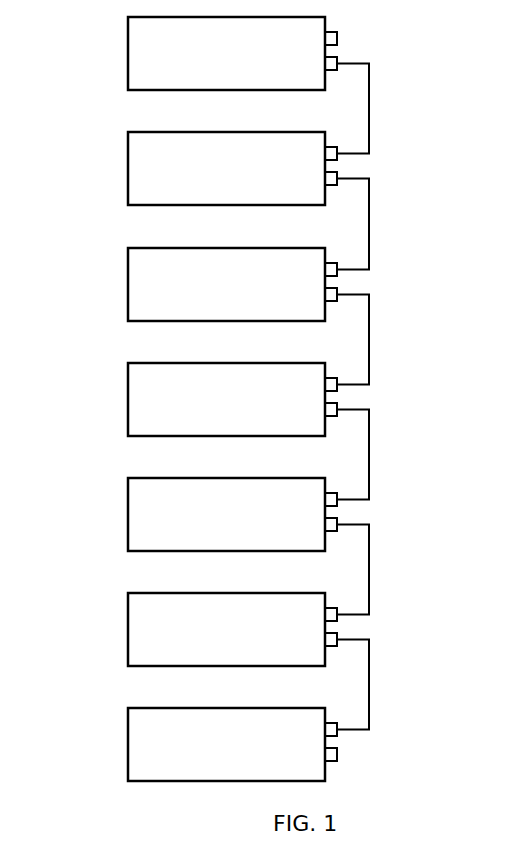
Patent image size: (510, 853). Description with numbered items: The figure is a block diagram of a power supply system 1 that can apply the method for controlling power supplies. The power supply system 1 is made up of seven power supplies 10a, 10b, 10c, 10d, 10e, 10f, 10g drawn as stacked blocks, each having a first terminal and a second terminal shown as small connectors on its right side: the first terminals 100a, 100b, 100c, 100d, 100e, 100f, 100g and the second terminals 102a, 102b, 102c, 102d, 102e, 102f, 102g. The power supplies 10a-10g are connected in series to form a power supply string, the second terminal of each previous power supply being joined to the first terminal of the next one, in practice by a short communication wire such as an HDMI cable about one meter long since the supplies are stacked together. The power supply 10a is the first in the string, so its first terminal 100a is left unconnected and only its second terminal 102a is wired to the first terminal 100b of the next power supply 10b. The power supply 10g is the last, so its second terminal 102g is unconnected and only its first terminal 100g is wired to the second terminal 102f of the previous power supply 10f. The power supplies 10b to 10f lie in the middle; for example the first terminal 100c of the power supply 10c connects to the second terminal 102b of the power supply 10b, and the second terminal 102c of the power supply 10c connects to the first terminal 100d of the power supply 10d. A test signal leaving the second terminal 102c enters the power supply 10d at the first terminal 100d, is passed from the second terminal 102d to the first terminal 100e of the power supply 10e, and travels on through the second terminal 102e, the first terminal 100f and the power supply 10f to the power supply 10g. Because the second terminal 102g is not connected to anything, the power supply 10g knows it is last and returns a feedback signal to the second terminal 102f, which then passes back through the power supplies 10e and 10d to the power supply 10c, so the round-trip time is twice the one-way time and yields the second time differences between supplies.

The power supply system 1 is at (461, 51).
The power supply 10a is at (129, 67).
The power supply 10b is at (129, 182).
The power supply 10c is at (129, 298).
The power supply 10d is at (129, 413).
The power supply 10e is at (129, 528).
The power supply 10f is at (129, 643).
The power supply 10g is at (129, 758).
The first terminal 100a is at (325, 39).
The first terminal 100b is at (325, 154).
The first terminal 100c is at (325, 270).
The first terminal 100d is at (325, 385).
The first terminal 100e is at (325, 500).
The first terminal 100f is at (325, 615).
The first terminal 100g is at (325, 730).
The second terminal 102a is at (325, 72).
The second terminal 102b is at (325, 187).
The second terminal 102c is at (325, 303).
The second terminal 102d is at (325, 418).
The second terminal 102e is at (325, 533).
The second terminal 102f is at (325, 648).
The second terminal 102g is at (325, 763).